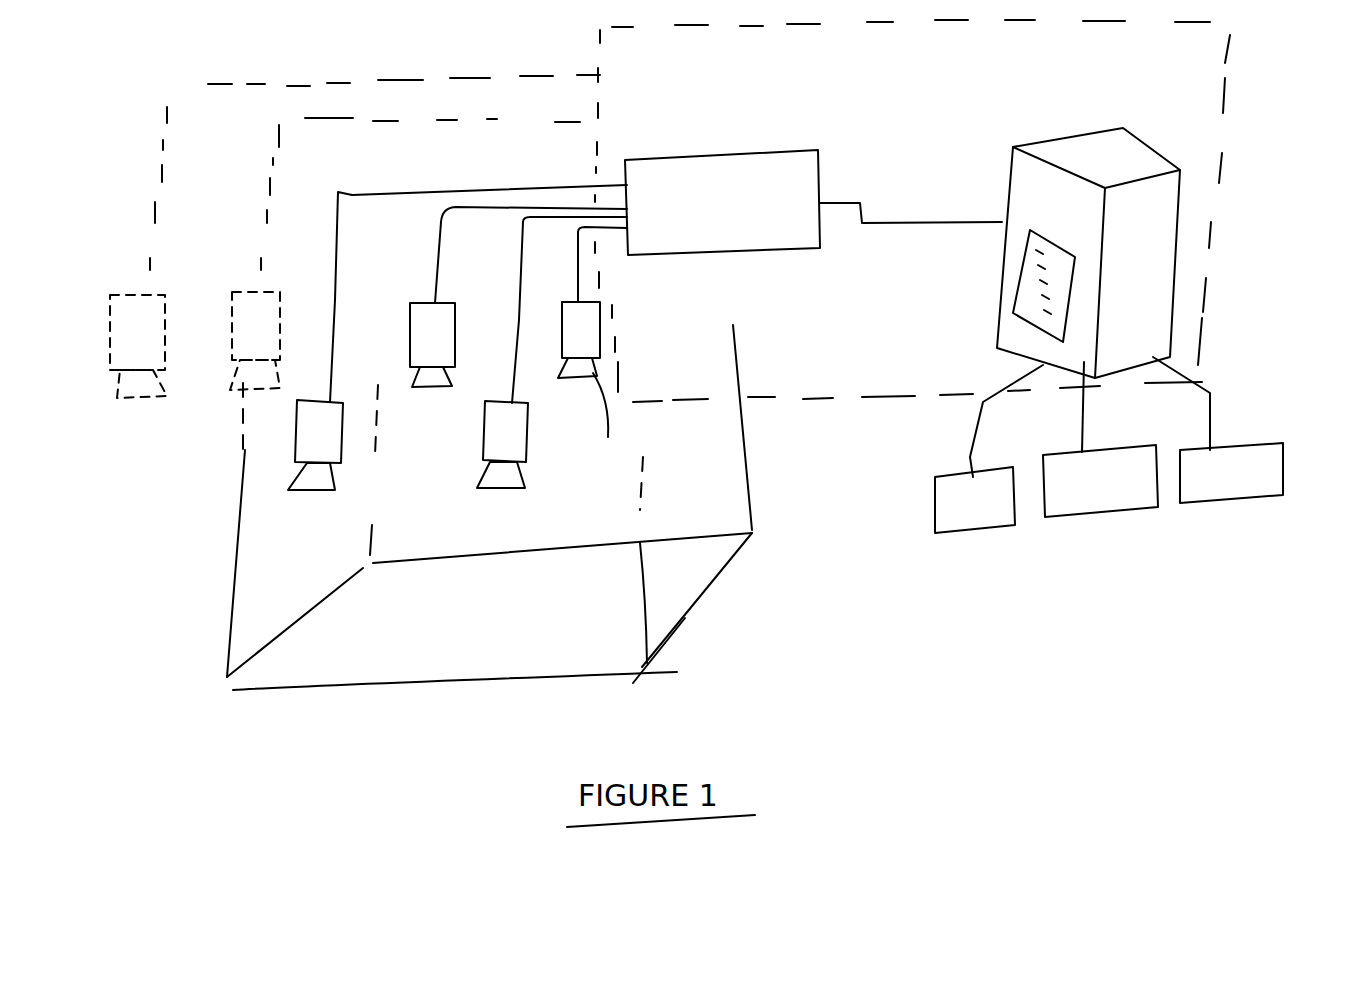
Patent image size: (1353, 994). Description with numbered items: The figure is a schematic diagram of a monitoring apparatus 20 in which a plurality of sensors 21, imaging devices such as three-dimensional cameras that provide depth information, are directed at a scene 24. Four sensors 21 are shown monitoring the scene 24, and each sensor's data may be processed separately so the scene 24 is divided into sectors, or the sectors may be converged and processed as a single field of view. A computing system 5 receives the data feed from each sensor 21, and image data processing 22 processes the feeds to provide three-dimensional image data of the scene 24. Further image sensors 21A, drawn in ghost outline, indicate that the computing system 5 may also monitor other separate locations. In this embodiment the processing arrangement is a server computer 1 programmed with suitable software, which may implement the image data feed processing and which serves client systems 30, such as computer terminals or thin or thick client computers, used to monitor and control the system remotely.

The server computer 1 is at (1190, 233).
The computing system 5 is at (1253, 81).
The apparatus 20 is at (828, 537).
The sensors 21 is at (435, 407).
The image sensors 21A is at (218, 398).
The image data processing 22 is at (839, 128).
The scene 24 is at (465, 622).
The client systems 30 is at (1215, 488).